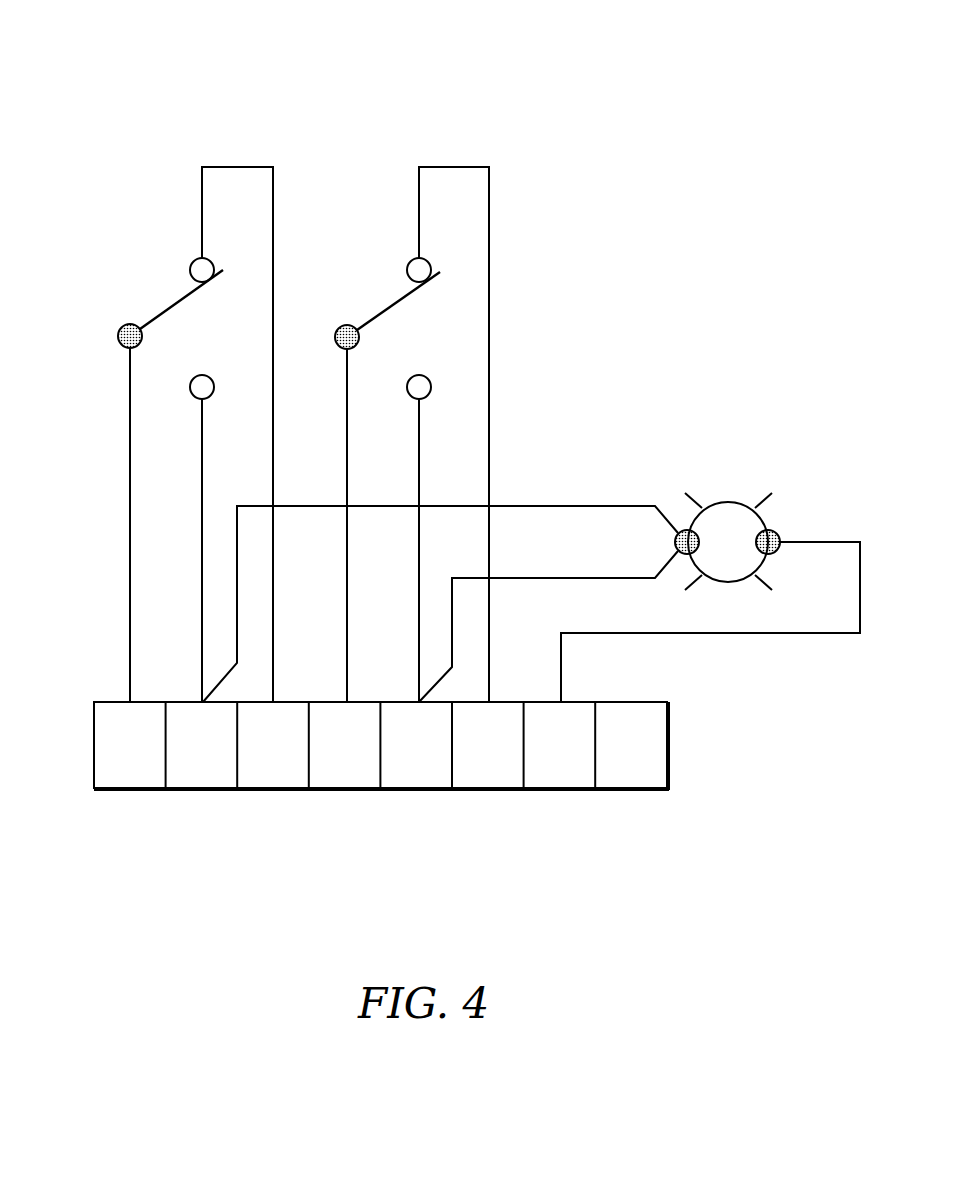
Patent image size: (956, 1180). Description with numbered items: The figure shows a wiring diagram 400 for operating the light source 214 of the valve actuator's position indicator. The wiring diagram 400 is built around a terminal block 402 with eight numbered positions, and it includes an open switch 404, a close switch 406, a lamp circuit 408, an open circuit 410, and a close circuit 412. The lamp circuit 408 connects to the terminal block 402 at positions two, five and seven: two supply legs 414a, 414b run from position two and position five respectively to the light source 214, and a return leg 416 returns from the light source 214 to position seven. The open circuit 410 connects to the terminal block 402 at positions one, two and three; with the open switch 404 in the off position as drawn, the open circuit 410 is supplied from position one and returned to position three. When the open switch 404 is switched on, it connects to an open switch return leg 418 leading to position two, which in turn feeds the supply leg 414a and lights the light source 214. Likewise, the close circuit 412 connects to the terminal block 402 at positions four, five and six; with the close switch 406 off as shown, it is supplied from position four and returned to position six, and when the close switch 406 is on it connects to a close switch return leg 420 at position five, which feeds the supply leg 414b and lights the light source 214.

The wiring diagram 400 is at (806, 48).
The terminal block 402 is at (588, 790).
The open switch 404 is at (125, 327).
The close switch 406 is at (342, 328).
The lamp circuit 408 is at (682, 346).
The open circuit 410 is at (243, 135).
The close circuit 412 is at (451, 135).
The supply leg 414a is at (520, 506).
The supply leg 414b is at (505, 578).
The return leg 416 is at (687, 633).
The open switch return leg 418 is at (200, 545).
The close switch return leg 420 is at (421, 456).
The light source 214 is at (774, 468).